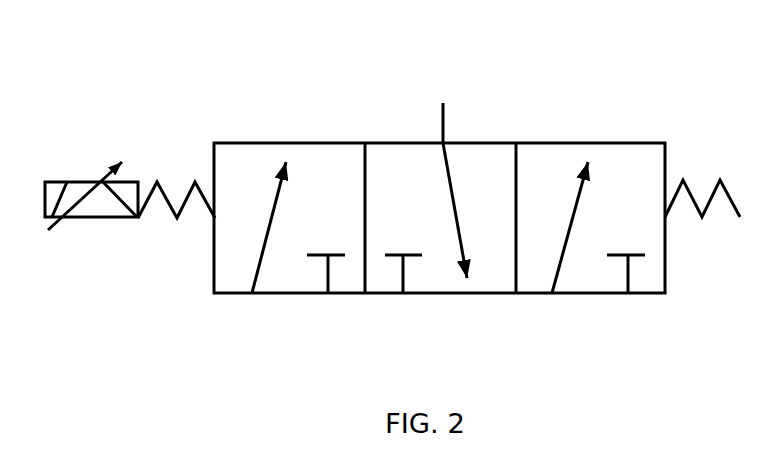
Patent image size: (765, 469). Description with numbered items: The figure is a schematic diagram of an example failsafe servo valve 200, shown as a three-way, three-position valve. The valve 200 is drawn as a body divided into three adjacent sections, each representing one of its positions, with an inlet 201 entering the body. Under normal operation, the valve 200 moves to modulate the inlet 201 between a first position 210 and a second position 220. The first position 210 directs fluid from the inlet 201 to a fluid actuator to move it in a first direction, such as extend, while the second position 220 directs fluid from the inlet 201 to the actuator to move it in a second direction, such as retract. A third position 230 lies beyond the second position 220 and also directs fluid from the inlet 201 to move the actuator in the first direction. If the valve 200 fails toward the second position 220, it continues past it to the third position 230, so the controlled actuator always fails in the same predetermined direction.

The valve 200 is at (69, 67).
The inlet 201 is at (442, 121).
The first position 210 is at (357, 327).
The second position 220 is at (504, 327).
The third position 230 is at (647, 327).